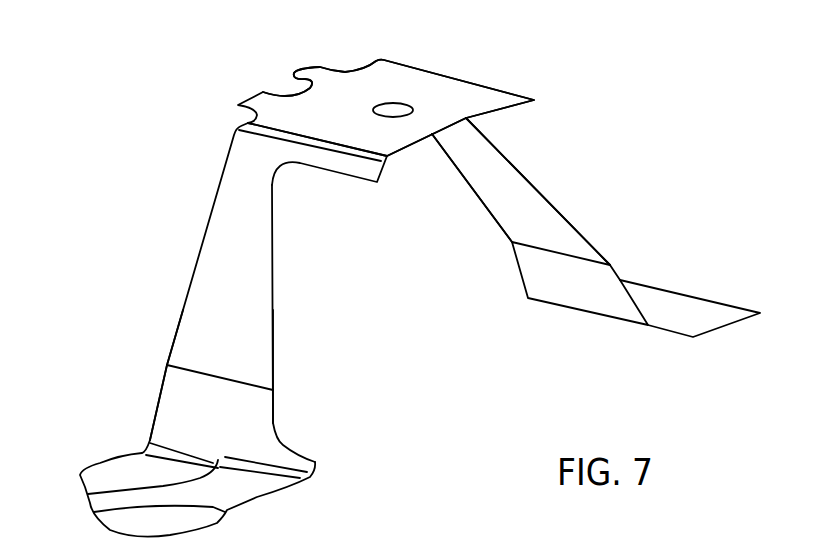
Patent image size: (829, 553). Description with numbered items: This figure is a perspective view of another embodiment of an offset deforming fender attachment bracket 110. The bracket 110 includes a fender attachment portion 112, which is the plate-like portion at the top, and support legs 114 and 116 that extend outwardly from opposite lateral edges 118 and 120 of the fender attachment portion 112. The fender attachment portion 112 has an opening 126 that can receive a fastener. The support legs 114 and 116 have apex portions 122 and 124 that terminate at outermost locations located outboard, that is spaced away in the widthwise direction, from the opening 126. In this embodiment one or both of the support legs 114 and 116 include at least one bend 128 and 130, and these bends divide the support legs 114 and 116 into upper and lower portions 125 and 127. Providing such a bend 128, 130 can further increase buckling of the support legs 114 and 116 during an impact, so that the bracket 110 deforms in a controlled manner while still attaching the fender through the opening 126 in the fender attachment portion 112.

The offset deforming fender attachment bracket 110 is at (687, 120).
The fender attachment portion 112 is at (527, 75).
The support leg 114 is at (138, 372).
The support leg 116 is at (658, 266).
The lateral edge 118 is at (353, 148).
The lateral edge 120 is at (447, 85).
The apex portion 122 is at (195, 160).
The apex portion 124 is at (513, 128).
The upper portion 125 is at (293, 310).
The opening 126 is at (387, 102).
The lower portion 127 is at (297, 415).
The bend 128 is at (225, 380).
The bend 130 is at (557, 255).